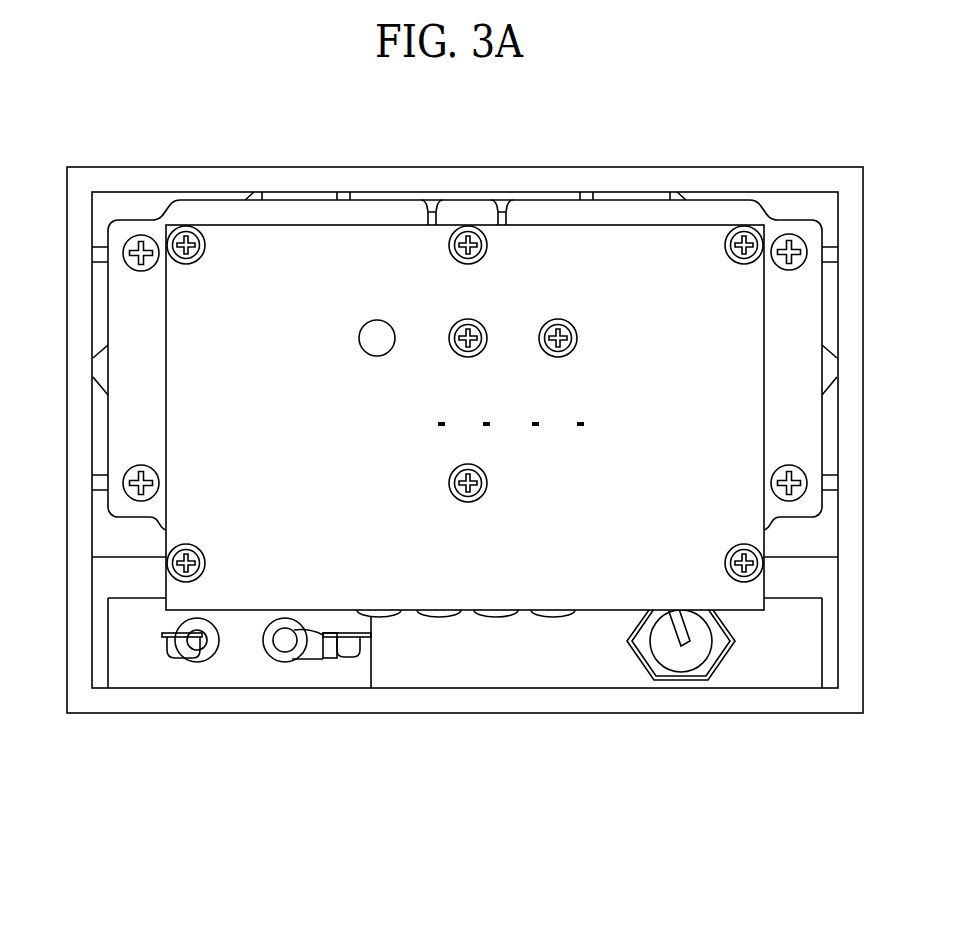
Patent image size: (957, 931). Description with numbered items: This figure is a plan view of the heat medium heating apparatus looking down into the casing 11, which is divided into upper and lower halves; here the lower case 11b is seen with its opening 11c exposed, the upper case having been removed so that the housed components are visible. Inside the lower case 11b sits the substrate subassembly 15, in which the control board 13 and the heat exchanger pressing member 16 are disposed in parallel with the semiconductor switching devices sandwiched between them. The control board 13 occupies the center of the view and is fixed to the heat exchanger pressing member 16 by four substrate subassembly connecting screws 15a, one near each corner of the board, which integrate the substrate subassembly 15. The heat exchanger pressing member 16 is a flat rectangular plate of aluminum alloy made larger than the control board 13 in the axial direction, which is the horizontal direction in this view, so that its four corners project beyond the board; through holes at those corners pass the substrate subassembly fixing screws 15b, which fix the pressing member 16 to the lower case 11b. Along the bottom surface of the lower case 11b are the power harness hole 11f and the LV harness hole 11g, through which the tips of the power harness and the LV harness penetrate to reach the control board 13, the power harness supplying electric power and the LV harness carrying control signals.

The casing 11 is at (465, 440).
The lower case 11b is at (656, 713).
The opening 11c is at (848, 513).
The power harness hole 11f is at (203, 662).
The LV harness hole 11g is at (723, 663).
The control board 13 is at (543, 247).
The substrate subassembly 15 is at (303, 203).
The substrate subassembly connecting screw 15a is at (202, 255).
The substrate subassembly fixing screw 15b is at (140, 235).
The heat exchanger pressing member 16 is at (805, 304).